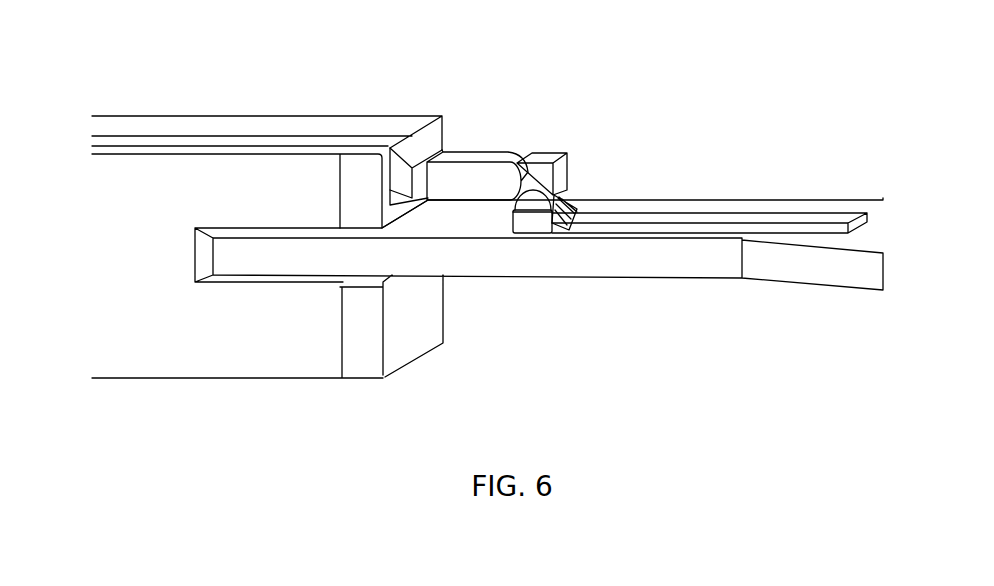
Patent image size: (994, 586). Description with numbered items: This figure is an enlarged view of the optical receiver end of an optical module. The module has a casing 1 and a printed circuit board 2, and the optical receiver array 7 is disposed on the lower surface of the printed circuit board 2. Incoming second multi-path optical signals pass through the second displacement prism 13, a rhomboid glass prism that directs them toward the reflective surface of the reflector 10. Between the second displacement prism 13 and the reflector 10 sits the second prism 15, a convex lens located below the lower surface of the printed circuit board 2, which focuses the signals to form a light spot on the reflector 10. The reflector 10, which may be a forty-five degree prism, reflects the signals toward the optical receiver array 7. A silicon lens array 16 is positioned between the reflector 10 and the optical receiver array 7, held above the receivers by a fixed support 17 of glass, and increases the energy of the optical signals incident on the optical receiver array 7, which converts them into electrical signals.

The casing 1 is at (328, 128).
The printed circuit board 2 is at (694, 205).
The optical receiver array 7 is at (568, 223).
The reflector 10 is at (546, 158).
The second displacement prism 13 is at (412, 157).
The second prism 15 is at (474, 150).
The silicon lens array 16 is at (535, 202).
The fixed support 17 is at (578, 197).